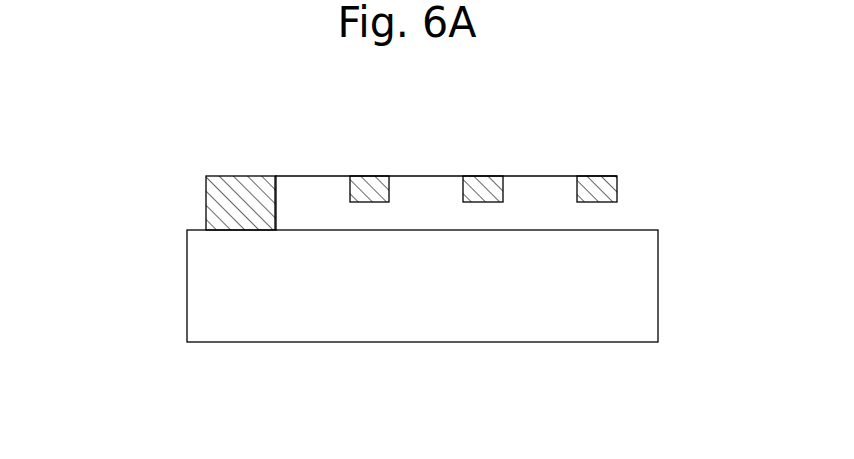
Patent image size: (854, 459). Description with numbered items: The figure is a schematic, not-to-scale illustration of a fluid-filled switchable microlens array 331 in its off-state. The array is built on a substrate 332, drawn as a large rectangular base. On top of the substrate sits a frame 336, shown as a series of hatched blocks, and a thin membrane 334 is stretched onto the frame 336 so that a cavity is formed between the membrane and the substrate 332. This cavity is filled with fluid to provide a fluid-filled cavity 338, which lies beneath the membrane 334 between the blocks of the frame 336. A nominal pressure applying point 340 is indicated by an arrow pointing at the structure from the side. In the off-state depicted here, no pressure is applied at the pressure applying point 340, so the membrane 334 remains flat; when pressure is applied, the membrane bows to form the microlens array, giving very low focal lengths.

The fluid-filled switchable microlens array 331 is at (150, 167).
The substrate 332 is at (431, 310).
The thin membrane 334 is at (430, 188).
The frame 336 is at (246, 195).
The fluid-filled cavity 338 is at (543, 188).
The nominal pressure applying point 340 is at (604, 217).